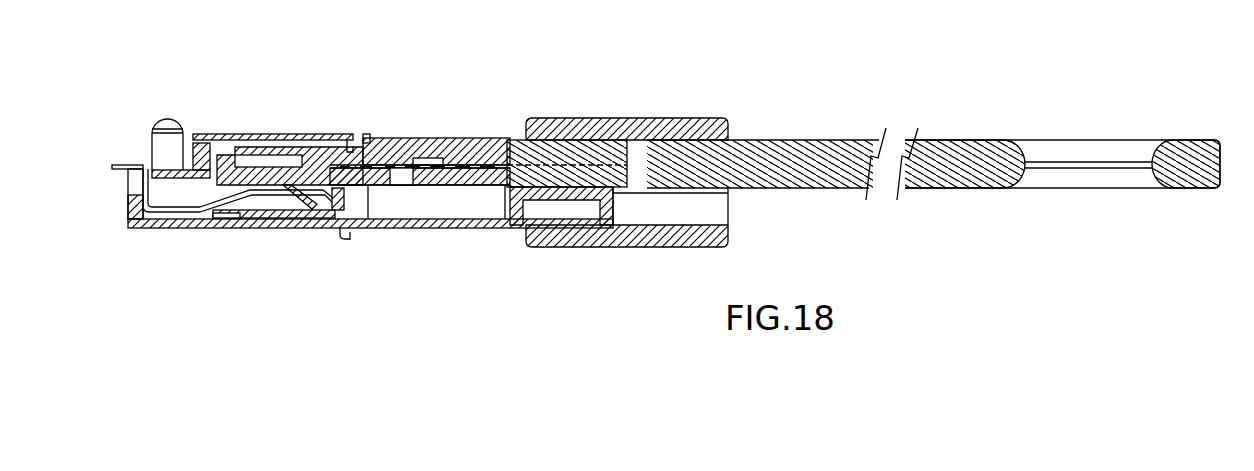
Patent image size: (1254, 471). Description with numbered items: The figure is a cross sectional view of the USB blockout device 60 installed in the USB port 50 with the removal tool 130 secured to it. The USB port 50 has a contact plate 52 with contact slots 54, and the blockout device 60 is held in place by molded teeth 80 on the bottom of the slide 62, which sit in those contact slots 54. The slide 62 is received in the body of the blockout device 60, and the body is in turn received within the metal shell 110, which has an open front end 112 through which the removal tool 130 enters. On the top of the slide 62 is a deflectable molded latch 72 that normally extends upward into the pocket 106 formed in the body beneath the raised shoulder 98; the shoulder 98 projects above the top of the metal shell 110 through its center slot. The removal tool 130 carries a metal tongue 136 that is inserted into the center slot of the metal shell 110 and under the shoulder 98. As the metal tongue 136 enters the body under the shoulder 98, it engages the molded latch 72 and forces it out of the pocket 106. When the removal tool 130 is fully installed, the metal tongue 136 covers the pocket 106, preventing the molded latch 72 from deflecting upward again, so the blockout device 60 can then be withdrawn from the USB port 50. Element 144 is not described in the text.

The USB port 50 is at (200, 88).
The contact plate 52 is at (330, 226).
The contact slots 54 is at (255, 212).
The USB blockout device 60 is at (394, 262).
The slide 62 is at (205, 185).
The molded latch 72 is at (447, 185).
The molded teeth 80 is at (310, 187).
The raised shoulder 98 is at (387, 135).
The pocket 106 is at (421, 165).
The metal shell 110 is at (288, 160).
The open front end 112 is at (228, 160).
The removal tool 130 is at (812, 100).
The metal tongue 136 is at (474, 165).
The collar 144 is at (672, 118).